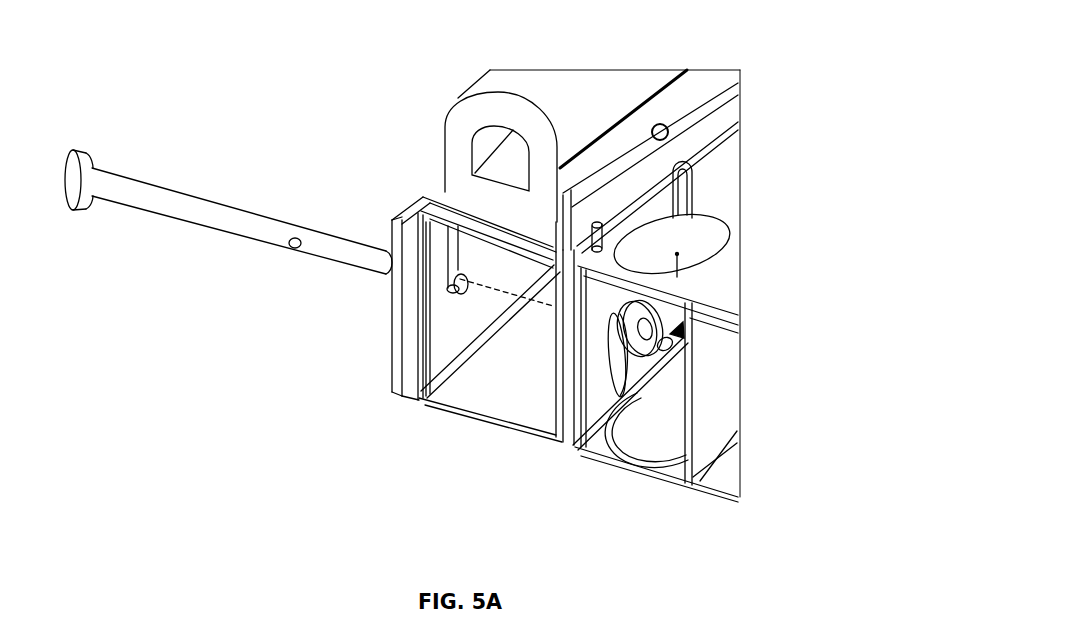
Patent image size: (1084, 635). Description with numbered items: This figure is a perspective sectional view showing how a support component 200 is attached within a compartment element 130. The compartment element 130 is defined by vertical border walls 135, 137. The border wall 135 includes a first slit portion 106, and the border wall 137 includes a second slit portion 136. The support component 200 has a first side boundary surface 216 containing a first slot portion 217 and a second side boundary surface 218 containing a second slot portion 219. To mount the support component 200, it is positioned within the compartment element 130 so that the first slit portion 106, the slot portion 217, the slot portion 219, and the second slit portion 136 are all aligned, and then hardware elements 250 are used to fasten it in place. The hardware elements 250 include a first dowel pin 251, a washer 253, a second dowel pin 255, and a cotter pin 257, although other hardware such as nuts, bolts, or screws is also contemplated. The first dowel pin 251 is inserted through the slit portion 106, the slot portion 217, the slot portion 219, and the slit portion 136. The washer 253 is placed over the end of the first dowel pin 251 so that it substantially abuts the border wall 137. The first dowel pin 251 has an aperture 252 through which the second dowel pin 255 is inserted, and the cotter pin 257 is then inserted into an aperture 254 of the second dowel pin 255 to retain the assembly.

The support component 200 is at (583, 97).
The compartment element 130 is at (412, 240).
The first slit portion 106 is at (398, 213).
The border wall 135 is at (402, 308).
The border wall 137 is at (588, 316).
The second slit portion 136 is at (612, 378).
The first side boundary surface 216 is at (455, 327).
The first slot portion 217 is at (457, 273).
The second side boundary surface 218 is at (570, 347).
The second slot portion 219 is at (598, 240).
The hardware elements 250 is at (145, 195).
The first dowel pin 251 is at (217, 213).
The aperture 252 is at (293, 240).
The washer 253 is at (653, 313).
The aperture 254 is at (673, 329).
The second dowel pin 255 is at (675, 337).
The cotter pin 257 is at (682, 193).